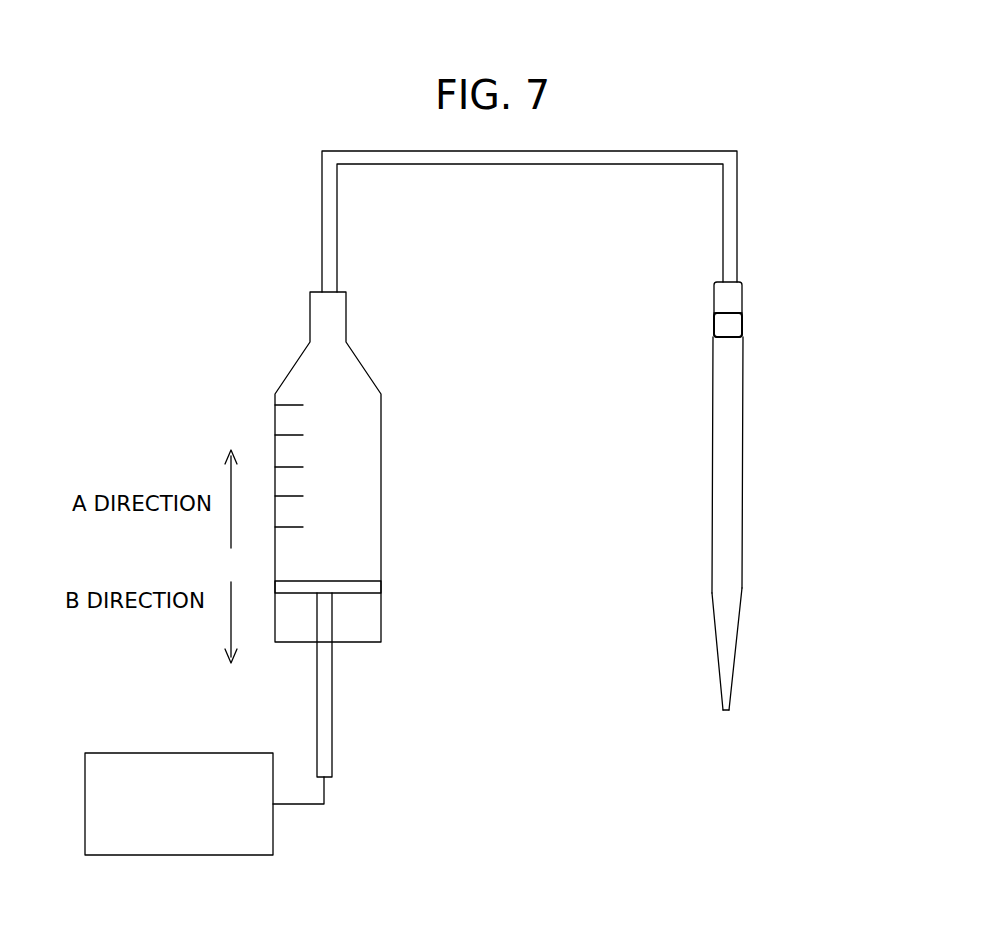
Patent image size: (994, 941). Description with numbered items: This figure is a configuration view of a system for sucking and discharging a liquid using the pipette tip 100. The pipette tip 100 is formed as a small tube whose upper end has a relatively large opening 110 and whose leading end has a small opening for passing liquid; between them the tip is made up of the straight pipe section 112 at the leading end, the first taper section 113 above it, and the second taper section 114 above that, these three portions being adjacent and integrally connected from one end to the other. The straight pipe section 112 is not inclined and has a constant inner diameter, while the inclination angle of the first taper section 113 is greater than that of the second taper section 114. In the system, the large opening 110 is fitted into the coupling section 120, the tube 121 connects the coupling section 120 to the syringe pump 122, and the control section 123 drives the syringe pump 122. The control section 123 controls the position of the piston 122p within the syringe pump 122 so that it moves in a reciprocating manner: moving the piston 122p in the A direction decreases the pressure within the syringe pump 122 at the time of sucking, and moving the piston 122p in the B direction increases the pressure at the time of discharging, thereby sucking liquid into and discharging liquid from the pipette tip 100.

The pipette tip 100 is at (780, 492).
The large opening 110 is at (722, 516).
The straight pipe section 112 is at (730, 697).
The first taper section 113 is at (738, 635).
The second taper section 114 is at (743, 536).
The coupling section 120 is at (742, 293).
The tube 121 is at (630, 165).
The syringe pump 122 is at (381, 488).
The piston 122p is at (353, 578).
The control section 123 is at (273, 832).